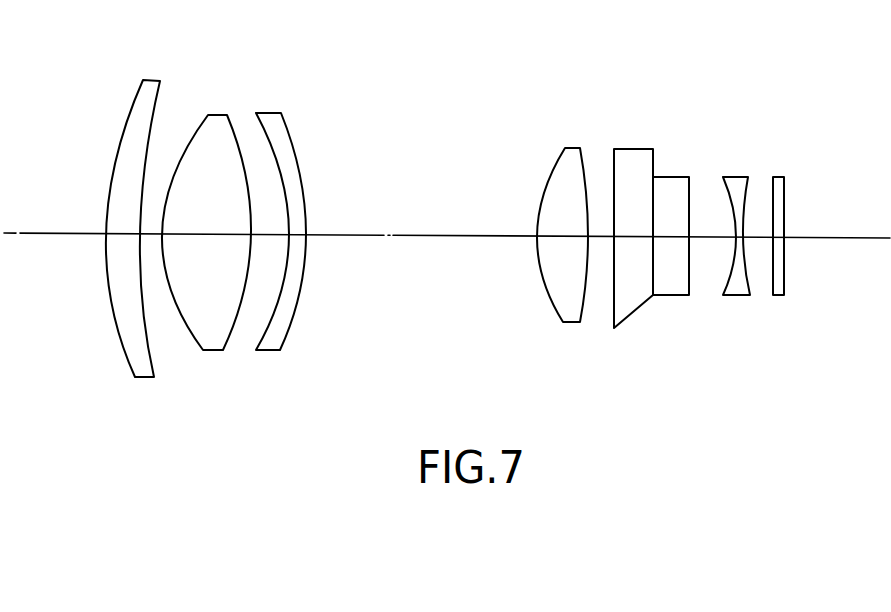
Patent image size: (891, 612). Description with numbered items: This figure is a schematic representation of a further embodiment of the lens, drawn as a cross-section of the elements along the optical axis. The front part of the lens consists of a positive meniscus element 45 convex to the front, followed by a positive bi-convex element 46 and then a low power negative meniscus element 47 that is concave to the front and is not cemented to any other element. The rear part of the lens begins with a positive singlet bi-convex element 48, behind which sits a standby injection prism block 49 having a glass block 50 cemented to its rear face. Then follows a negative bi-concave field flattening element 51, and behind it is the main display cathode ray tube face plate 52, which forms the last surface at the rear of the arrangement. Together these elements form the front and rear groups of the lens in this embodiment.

The positive meniscus element 45 is at (137, 358).
The positive bi-convex element 46 is at (213, 342).
The low power negative meniscus element 47 is at (272, 343).
The positive singlet bi-convex element 48 is at (565, 310).
The standby injection prism block 49 is at (628, 310).
The glass block 50 is at (673, 290).
The negative bi-concave field flattening element 51 is at (738, 288).
The main display cathode ray tube face plate 52 is at (778, 290).